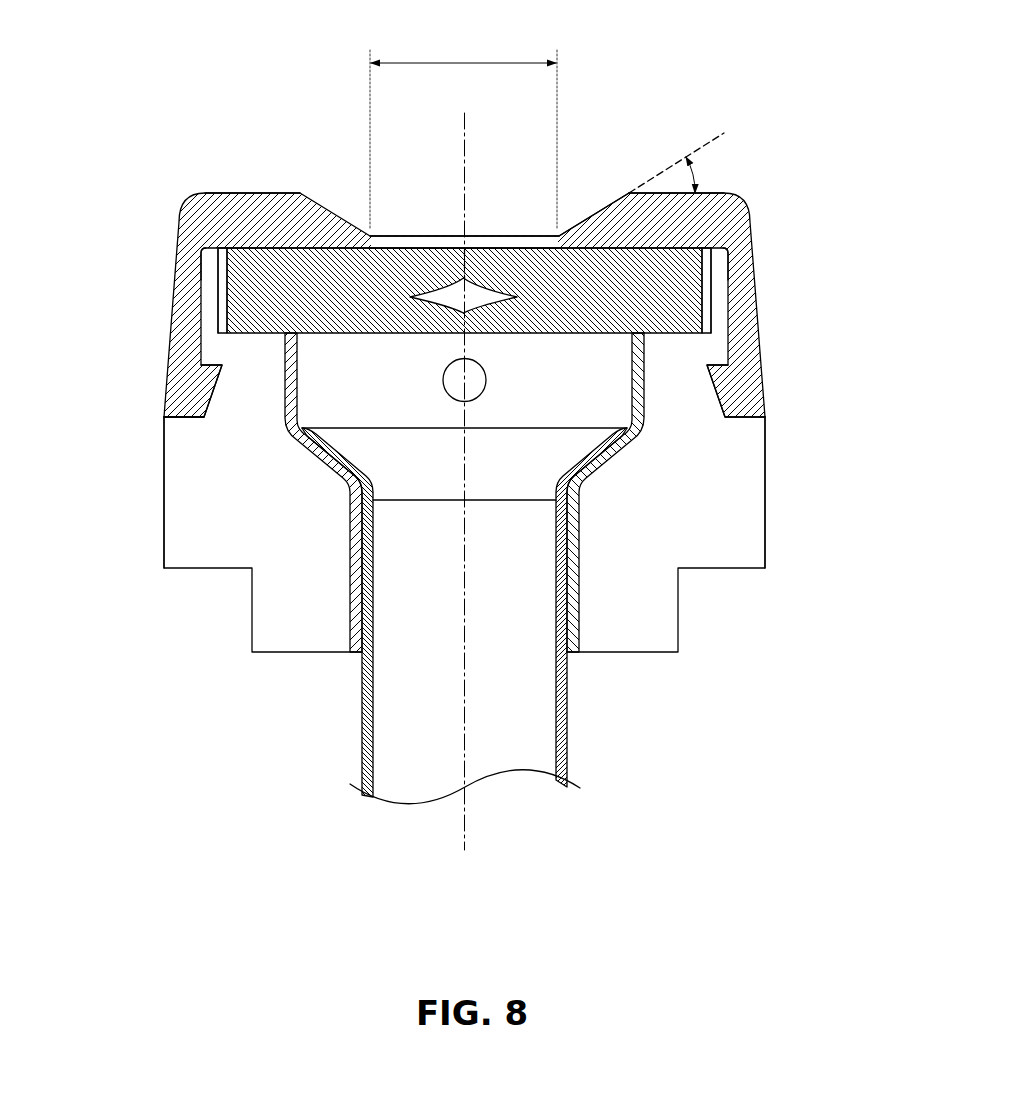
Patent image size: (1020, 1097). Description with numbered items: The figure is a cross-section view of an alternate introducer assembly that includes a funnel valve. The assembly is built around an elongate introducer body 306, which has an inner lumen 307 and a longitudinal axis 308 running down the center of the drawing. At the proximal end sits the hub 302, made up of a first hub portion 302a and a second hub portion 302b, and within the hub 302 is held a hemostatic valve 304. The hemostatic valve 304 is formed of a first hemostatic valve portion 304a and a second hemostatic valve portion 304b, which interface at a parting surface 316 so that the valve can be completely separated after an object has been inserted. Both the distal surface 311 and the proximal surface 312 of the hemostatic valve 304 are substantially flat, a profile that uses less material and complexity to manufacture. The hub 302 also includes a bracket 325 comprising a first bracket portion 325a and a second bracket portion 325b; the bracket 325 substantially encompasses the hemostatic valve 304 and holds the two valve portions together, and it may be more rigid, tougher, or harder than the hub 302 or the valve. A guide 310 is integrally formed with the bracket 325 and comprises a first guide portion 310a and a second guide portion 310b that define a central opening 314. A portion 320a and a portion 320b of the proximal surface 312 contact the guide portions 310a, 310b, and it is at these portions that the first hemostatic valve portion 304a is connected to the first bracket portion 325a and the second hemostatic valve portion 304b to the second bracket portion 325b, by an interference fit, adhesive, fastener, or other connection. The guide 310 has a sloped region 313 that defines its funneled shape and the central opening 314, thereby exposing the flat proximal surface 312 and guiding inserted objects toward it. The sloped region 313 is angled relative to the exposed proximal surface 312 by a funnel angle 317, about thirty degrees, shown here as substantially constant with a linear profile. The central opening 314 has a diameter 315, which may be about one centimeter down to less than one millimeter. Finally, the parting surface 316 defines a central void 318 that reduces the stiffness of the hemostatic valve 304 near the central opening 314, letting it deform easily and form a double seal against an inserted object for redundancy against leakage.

The hub 302 is at (710, 598).
The first hub portion 302a is at (198, 482).
The second hub portion 302b is at (698, 502).
The hemostatic valve 304 is at (270, 320).
The first hemostatic valve portion 304a is at (255, 290).
The second hemostatic valve portion 304b is at (688, 295).
The elongate introducer body 306 is at (568, 710).
The inner lumen 307 is at (543, 743).
The longitudinal axis 308 is at (465, 710).
The guide 310 is at (320, 222).
The first guide portion 310a is at (323, 238).
The second guide portion 310b is at (637, 214).
The distal surface 311 is at (335, 333).
The proximal surface 312 is at (512, 268).
The sloped region 313 is at (555, 233).
The central opening 314 is at (447, 250).
The diameter 315 is at (463, 134).
The parting surface 316 is at (465, 264).
The funnel angle 317 is at (700, 173).
The central void 318 is at (445, 296).
The portion of the proximal surface 320a is at (250, 247).
The portion of the proximal surface 320b is at (688, 243).
The bracket 325 is at (173, 378).
The first bracket portion 325a is at (185, 415).
The second bracket portion 325b is at (738, 395).